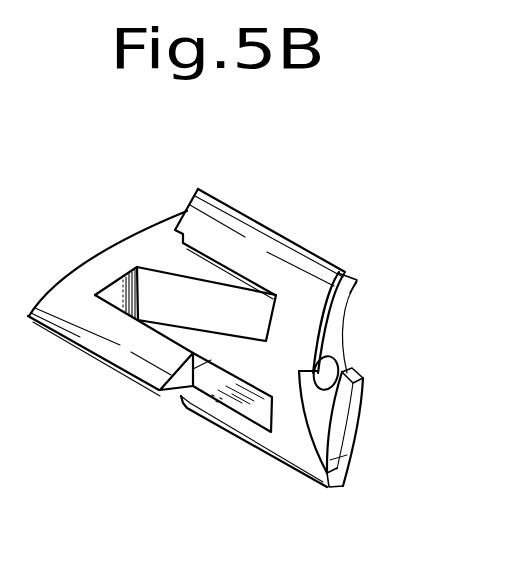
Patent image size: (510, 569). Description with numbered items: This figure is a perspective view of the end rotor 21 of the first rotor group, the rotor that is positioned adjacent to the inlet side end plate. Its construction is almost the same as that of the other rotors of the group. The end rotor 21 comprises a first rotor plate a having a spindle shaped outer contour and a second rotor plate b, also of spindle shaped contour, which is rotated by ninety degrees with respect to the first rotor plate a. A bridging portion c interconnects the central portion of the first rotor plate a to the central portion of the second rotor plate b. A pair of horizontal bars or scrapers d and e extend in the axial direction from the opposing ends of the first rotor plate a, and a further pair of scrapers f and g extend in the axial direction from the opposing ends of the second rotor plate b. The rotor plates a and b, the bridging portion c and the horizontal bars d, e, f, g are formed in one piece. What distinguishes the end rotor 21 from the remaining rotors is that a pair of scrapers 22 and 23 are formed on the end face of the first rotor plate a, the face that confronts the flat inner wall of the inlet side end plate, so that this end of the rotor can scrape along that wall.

The end rotor 21 is at (231, 329).
The scraper 22 is at (303, 323).
The scraper 23 is at (347, 432).
The first rotor plate a is at (290, 422).
The second rotor plate b is at (102, 262).
The bridging portion c is at (233, 355).
The scraper d is at (214, 230).
The scraper e is at (245, 429).
The scraper f is at (127, 344).
The scraper g is at (348, 268).